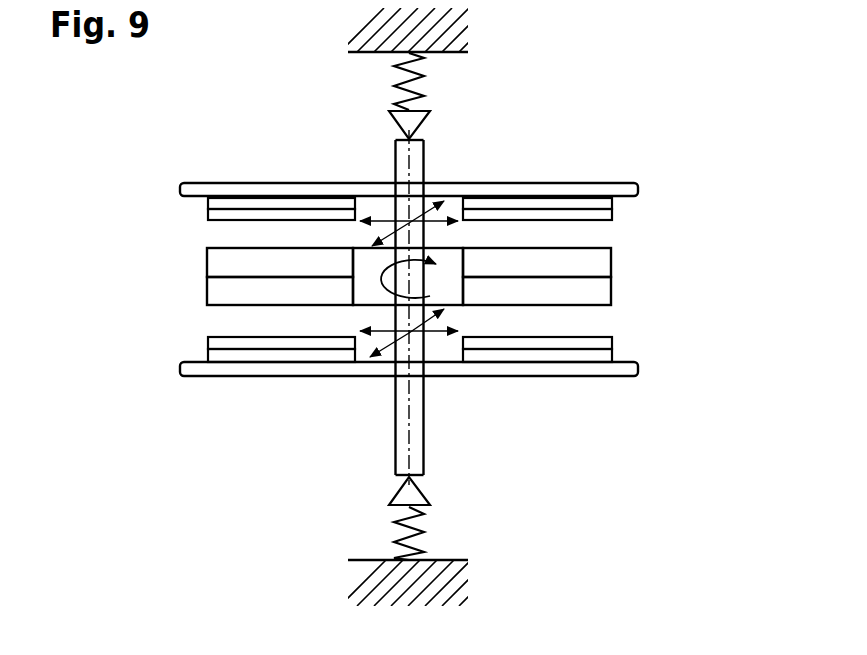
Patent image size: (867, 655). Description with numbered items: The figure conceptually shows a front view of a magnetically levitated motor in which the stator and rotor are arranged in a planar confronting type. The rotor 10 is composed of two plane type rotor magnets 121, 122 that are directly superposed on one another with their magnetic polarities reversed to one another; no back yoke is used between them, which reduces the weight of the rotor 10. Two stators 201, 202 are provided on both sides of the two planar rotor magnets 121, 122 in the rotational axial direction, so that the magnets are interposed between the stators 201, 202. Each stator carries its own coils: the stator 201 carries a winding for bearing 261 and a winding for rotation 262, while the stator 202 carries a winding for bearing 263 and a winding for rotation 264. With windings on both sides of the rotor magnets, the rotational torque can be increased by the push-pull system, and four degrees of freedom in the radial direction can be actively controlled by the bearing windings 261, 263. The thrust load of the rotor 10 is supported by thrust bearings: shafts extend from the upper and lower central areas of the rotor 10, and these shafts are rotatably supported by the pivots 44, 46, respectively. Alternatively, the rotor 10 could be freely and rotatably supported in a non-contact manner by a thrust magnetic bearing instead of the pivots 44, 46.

The rotor 10 is at (487, 307).
The pivot 44 is at (434, 493).
The pivot 46 is at (434, 119).
The planar rotor magnet 121 is at (612, 262).
The planar rotor magnet 122 is at (612, 298).
The stator 201 is at (452, 166).
The stator 202 is at (371, 380).
The winding for bearing 261 is at (614, 204).
The winding for rotation 262 is at (613, 213).
The winding for bearing 263 is at (210, 356).
The winding for rotation 264 is at (210, 345).